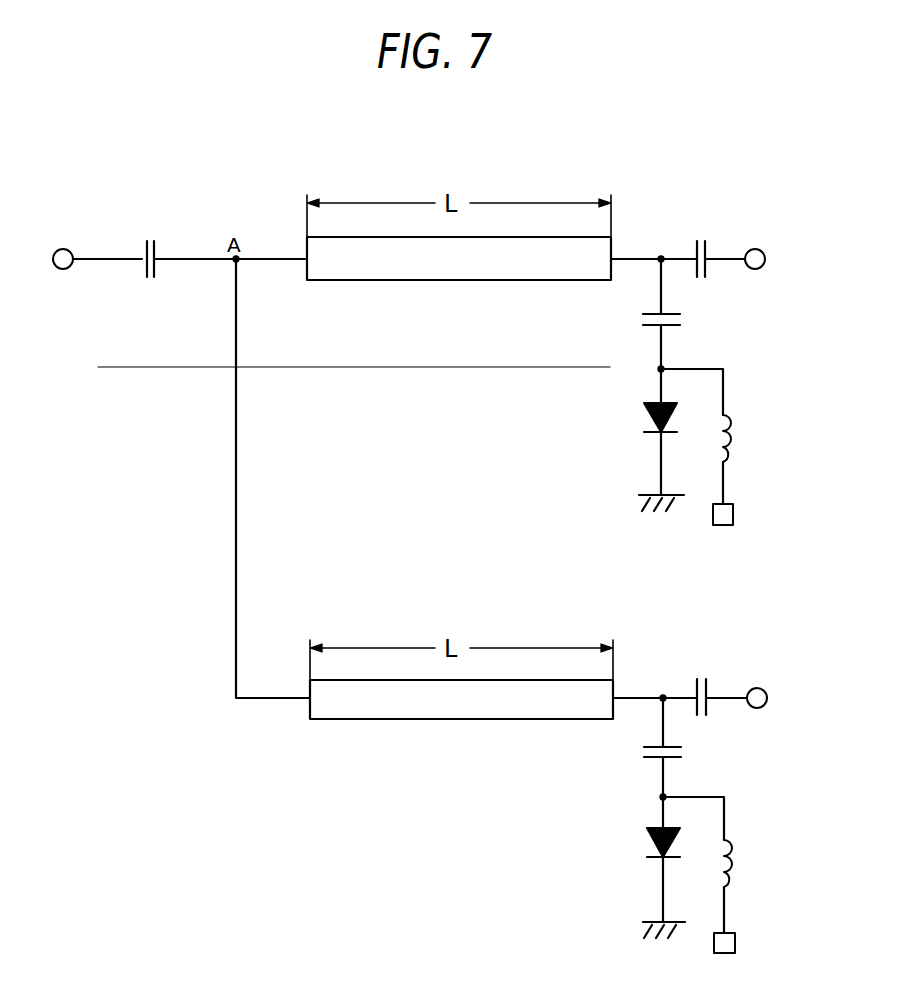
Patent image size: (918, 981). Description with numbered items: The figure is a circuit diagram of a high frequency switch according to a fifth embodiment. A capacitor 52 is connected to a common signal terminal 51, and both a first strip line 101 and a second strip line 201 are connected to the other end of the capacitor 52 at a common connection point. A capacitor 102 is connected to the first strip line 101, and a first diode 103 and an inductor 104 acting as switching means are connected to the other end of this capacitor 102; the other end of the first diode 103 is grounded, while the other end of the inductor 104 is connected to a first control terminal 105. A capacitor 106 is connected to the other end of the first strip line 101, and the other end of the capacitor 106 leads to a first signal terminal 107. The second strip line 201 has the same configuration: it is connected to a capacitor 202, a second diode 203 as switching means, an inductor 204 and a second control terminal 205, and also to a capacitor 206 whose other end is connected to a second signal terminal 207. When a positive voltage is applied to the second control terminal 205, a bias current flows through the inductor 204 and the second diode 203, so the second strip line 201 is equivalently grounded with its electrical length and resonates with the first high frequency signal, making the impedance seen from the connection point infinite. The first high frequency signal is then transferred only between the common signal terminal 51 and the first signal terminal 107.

The common signal terminal 51 is at (70, 249).
The capacitor 52 is at (152, 279).
The first strip line 101 is at (458, 281).
The capacitor 102 is at (645, 324).
The first diode 103 is at (650, 415).
The inductor 104 is at (735, 442).
The first control terminal 105 is at (735, 513).
The capacitor 106 is at (700, 238).
The first signal terminal 107 is at (760, 249).
The second strip line 201 is at (430, 720).
The capacitor 202 is at (645, 757).
The second diode 203 is at (652, 840).
The inductor 204 is at (738, 852).
The second control terminal 205 is at (736, 940).
The capacitor 206 is at (698, 677).
The second signal terminal 207 is at (760, 688).